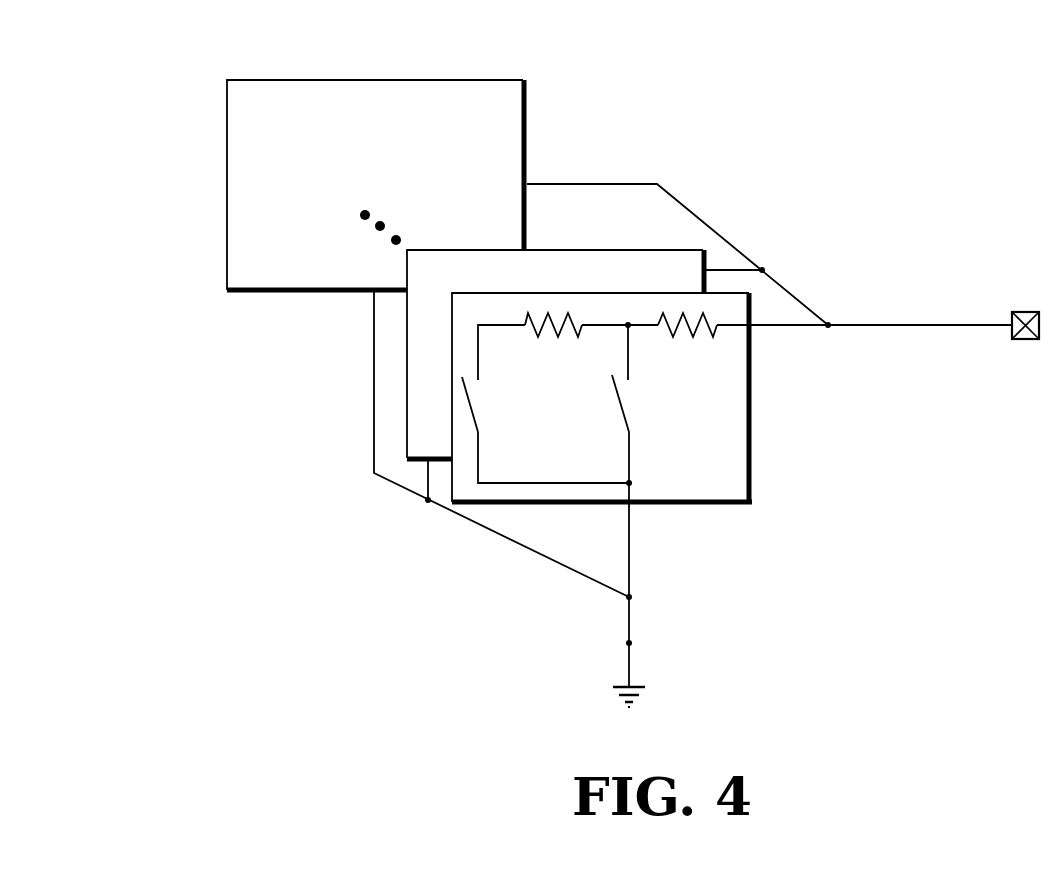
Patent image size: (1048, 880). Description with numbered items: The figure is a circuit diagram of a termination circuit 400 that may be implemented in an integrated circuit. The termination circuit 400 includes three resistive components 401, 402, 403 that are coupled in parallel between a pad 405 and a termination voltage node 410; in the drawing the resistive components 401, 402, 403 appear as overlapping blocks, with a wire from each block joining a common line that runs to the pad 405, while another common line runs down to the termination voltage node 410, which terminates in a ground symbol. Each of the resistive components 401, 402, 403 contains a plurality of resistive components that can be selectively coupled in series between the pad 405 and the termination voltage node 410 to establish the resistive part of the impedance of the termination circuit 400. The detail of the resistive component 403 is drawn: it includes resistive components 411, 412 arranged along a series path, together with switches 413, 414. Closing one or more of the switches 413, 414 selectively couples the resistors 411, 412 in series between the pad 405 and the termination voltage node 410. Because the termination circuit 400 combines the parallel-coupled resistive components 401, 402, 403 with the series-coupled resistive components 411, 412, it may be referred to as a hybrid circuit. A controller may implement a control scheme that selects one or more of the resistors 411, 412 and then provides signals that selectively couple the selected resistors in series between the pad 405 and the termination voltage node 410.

The termination circuit 400 is at (805, 65).
The resistive component 401 is at (227, 125).
The resistive component 402 is at (406, 392).
The resistive component 403 is at (752, 468).
The pad 405 is at (1028, 312).
The termination voltage node 410 is at (632, 643).
The resistive component 411 is at (540, 335).
The resistive component 412 is at (675, 335).
The switch 413 is at (478, 430).
The switch 414 is at (632, 432).